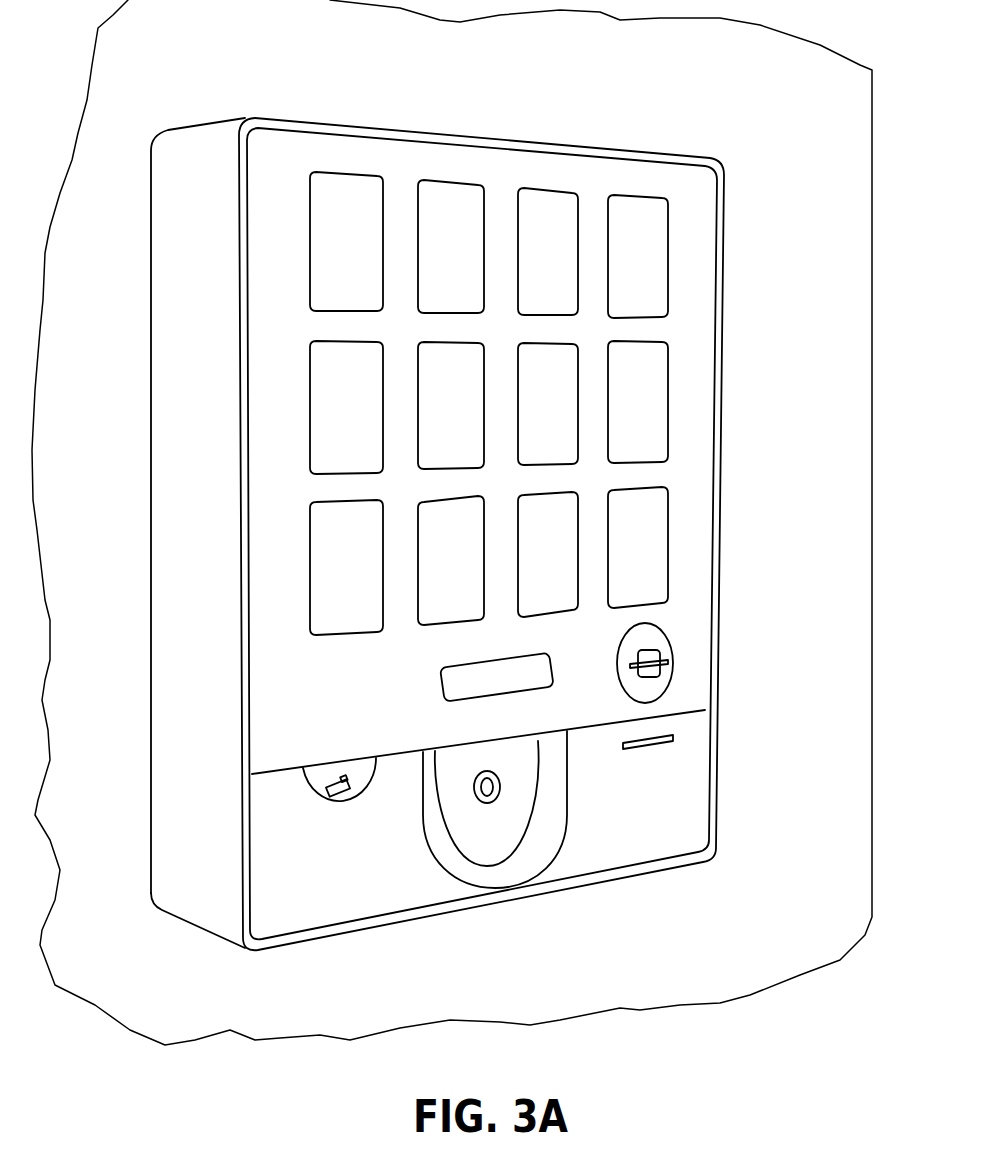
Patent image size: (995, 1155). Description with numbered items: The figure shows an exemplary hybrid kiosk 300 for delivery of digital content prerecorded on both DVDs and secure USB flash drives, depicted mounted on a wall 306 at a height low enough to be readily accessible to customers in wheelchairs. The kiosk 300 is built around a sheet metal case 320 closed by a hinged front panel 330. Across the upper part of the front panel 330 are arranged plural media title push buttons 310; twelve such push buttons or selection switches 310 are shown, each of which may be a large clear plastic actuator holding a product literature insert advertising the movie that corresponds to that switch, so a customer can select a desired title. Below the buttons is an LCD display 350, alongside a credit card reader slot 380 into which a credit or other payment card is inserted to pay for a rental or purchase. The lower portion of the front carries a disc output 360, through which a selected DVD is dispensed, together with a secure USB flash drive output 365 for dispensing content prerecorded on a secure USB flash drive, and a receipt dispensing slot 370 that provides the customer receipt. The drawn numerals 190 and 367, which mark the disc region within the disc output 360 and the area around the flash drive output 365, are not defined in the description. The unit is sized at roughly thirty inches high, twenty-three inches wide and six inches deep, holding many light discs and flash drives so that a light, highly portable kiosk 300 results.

The kiosk 300 is at (595, 95).
The wall 306 is at (813, 411).
The media title push buttons 310 is at (668, 241).
The sheet metal case 320 is at (170, 247).
The hinged front panel 330 is at (263, 490).
The LCD display 350 is at (440, 672).
The disc output 360 is at (517, 835).
The media item / disc icon 190 is at (512, 838).
The secure USB flash drive output 365 is at (347, 802).
The card reader area 367 is at (323, 793).
The receipt dispensing slot 370 is at (663, 742).
The credit card reader slot 380 is at (662, 655).